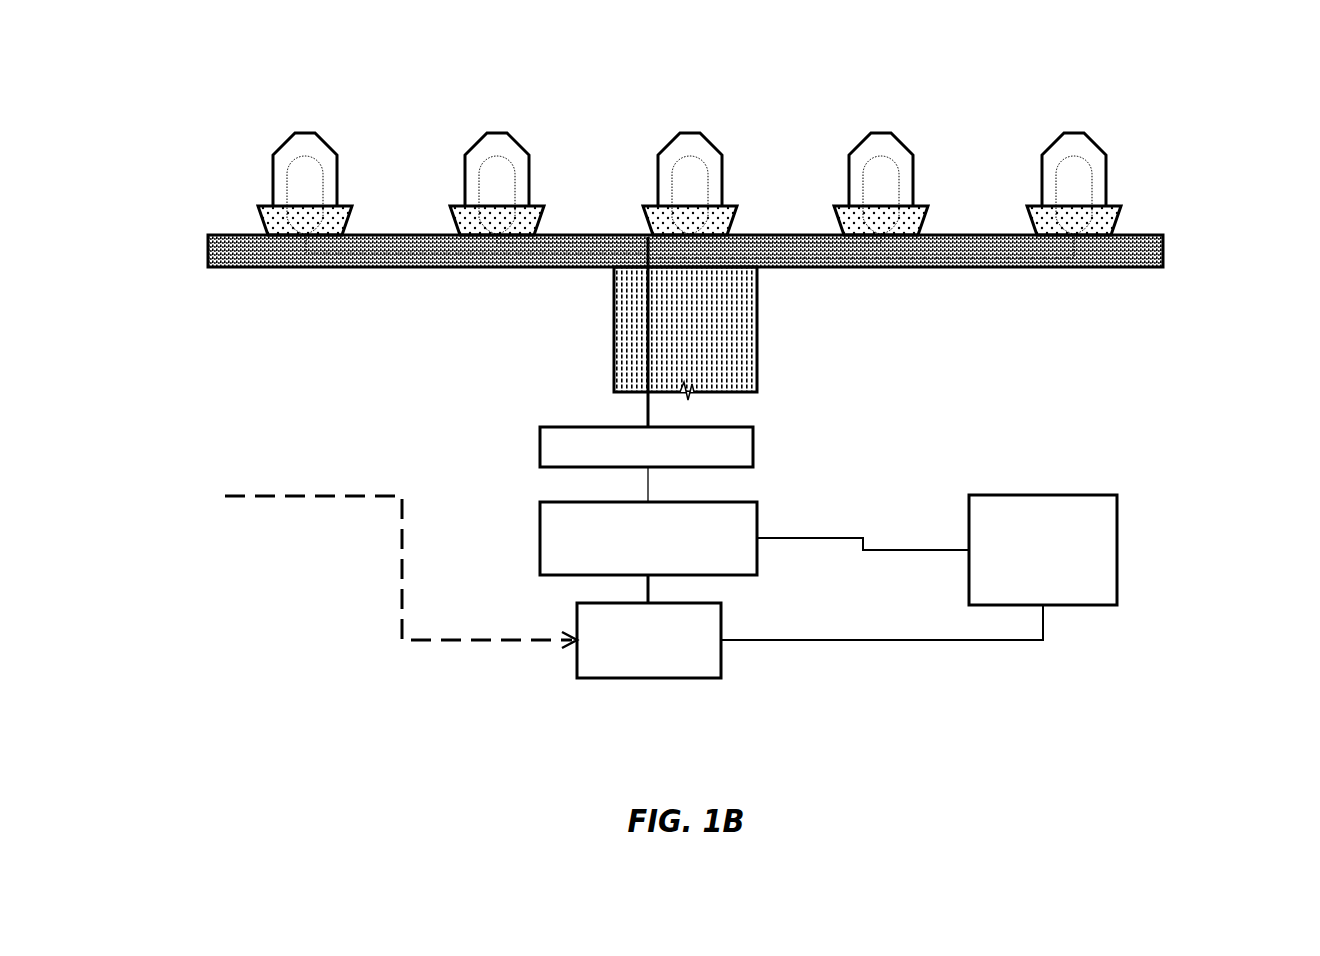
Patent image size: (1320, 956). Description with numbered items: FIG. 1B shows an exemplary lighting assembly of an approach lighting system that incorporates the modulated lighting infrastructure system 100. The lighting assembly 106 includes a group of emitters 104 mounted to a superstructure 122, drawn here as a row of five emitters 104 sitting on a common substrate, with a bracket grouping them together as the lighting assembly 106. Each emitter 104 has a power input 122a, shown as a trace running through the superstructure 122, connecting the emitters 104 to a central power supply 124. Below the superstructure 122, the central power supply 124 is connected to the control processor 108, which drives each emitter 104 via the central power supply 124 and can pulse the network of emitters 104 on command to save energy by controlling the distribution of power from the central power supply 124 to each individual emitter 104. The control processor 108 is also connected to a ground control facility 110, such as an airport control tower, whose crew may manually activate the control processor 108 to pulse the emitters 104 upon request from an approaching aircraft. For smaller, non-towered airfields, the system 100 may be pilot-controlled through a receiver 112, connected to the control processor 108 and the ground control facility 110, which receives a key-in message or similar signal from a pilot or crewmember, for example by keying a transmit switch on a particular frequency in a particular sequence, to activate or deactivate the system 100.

The modulated lighting infrastructure system 100 is at (146, 142).
The emitter 104 is at (312, 132).
The lighting assembly 106 is at (1180, 113).
The control processor 108 is at (735, 578).
The ground control facility 110 is at (987, 495).
The receiver 112 is at (721, 670).
The superstructure 122 is at (757, 330).
The power input 122a is at (572, 268).
The central power supply 124 is at (757, 445).